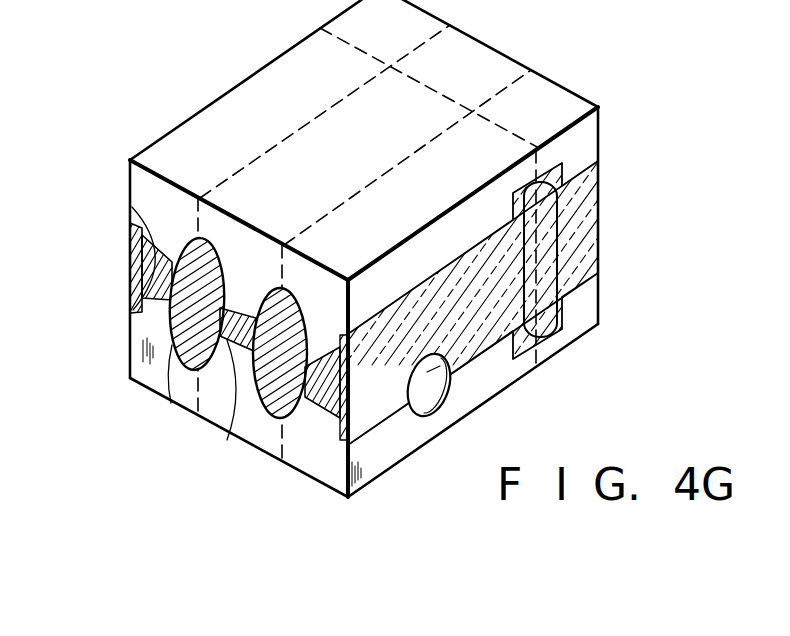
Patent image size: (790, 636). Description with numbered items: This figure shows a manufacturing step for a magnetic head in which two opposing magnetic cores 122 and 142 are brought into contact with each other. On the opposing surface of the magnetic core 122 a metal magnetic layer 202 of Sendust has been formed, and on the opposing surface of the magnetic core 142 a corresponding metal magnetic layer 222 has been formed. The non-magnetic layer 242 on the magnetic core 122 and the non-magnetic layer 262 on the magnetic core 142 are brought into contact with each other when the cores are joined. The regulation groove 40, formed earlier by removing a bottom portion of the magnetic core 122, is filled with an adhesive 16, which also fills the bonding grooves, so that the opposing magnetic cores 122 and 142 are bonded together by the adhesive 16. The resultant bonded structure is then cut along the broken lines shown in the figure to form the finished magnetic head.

The magnetic core 122 is at (548, 96).
The magnetic core 142 is at (386, 448).
The metal magnetic layer 202 is at (132, 207).
The metal magnetic layer 222 is at (132, 313).
The regulation groove 40 is at (221, 266).
The adhesive 16 is at (173, 400).
The non-magnetic layer 242 is at (229, 440).
The non-magnetic layer 262 is at (229, 440).